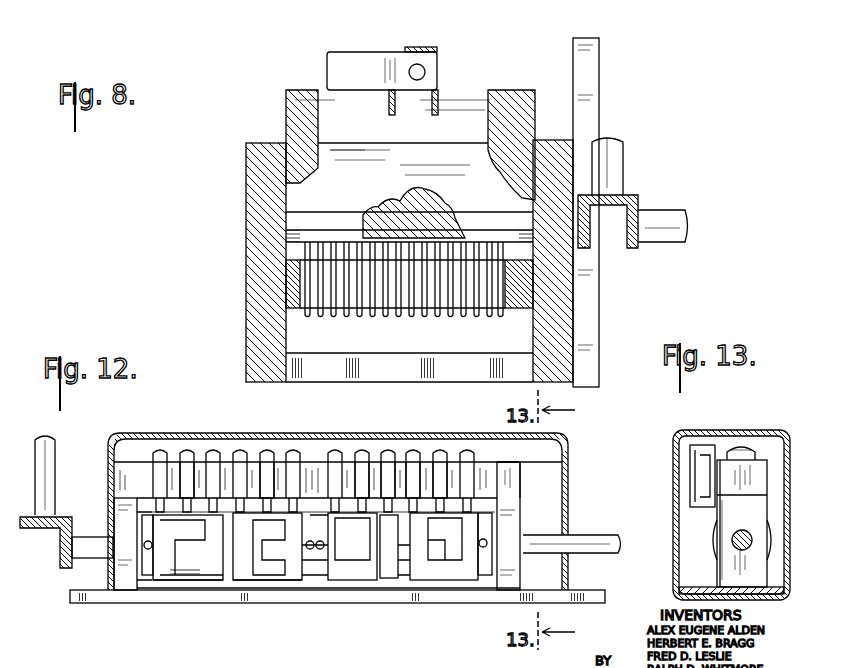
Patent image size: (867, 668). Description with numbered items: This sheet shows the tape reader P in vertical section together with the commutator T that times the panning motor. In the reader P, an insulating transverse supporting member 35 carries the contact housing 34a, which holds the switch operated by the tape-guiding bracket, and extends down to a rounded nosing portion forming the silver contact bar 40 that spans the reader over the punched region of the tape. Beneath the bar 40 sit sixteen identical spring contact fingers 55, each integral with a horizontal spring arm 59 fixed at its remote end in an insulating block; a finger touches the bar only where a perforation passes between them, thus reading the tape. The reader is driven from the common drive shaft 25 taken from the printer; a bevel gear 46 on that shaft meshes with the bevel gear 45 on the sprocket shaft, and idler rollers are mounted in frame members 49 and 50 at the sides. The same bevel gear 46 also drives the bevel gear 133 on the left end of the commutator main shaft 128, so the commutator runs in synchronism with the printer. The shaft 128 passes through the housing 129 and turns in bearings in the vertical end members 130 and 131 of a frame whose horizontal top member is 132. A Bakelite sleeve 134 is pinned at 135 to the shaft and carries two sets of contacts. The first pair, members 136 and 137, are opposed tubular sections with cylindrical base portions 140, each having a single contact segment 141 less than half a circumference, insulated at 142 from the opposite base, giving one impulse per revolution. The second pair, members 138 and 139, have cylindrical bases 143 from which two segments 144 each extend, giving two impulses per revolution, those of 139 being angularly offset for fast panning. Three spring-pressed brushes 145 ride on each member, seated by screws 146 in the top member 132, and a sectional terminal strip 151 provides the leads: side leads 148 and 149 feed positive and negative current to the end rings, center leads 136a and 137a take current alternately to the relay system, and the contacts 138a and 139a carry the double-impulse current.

In FIG. 8, the contact housing 34a is at (360, 62).
In FIG. 8, the reader P is at (624, 81).
In FIG. 8, the drive shaft 25 is at (612, 174).
In FIG. 12, the drive shaft 25 is at (54, 464).
In FIG. 8, the bevel gear 46 is at (622, 197).
In FIG. 12, the bevel gear 46 is at (59, 536).
In FIG. 8, the bevel gear 133 is at (645, 208).
In FIG. 12, the bevel gear 133 is at (60, 565).
In FIG. 8, the bevel gear 45 is at (592, 246).
In FIG. 8, the frame member 49 is at (560, 335).
In FIG. 8, the contact bar 40 is at (299, 223).
In FIG. 8, the frame member 50 is at (255, 334).
In FIG. 8, the transverse supporting member 35 is at (360, 186).
In FIG. 8, the spring contact fingers 55 is at (349, 238).
In FIG. 8, the spring arm 59 is at (408, 336).
In FIG. 12, the housing 129 is at (568, 477).
In FIG. 12, the insulating sleeve 134 is at (136, 584).
In FIG. 12, the vertical end member 131 is at (122, 573).
In FIG. 12, the brushes 145 is at (112, 506).
In FIG. 12, the vertical end member 130 is at (505, 520).
In FIG. 13, the vertical end member 130 is at (735, 512).
In FIG. 12, the screws 146 is at (240, 450).
In FIG. 12, the contact 138a is at (187, 478).
In FIG. 12, the contact 139a is at (267, 476).
In FIG. 12, the center lead 136a is at (362, 477).
In FIG. 12, the commutator T is at (388, 420).
In FIG. 12, the side lead 148 is at (398, 472).
In FIG. 12, the center lead 137a is at (418, 478).
In FIG. 12, the side lead 149 is at (444, 482).
In FIG. 12, the terminal strip 151 is at (512, 478).
In FIG. 13, the terminal strip 151 is at (699, 450).
In FIG. 12, the insulation 142 is at (206, 522).
In FIG. 12, the cylindrical base 143 is at (152, 582).
In FIG. 12, the contact member 138 is at (178, 587).
In FIG. 12, the contact segments 144 is at (196, 584).
In FIG. 12, the contact member 139 is at (270, 580).
In FIG. 12, the pin 135 is at (306, 547).
In FIG. 12, the contact segment 141 is at (365, 564).
In FIG. 12, the cylindrical base portion 140 is at (325, 578).
In FIG. 12, the contact member 136 is at (402, 580).
In FIG. 12, the contact member 137 is at (436, 580).
In FIG. 12, the main shaft 128 is at (582, 536).
In FIG. 13, the main shaft 128 is at (733, 547).
In FIG. 13, the top member 132 is at (757, 458).